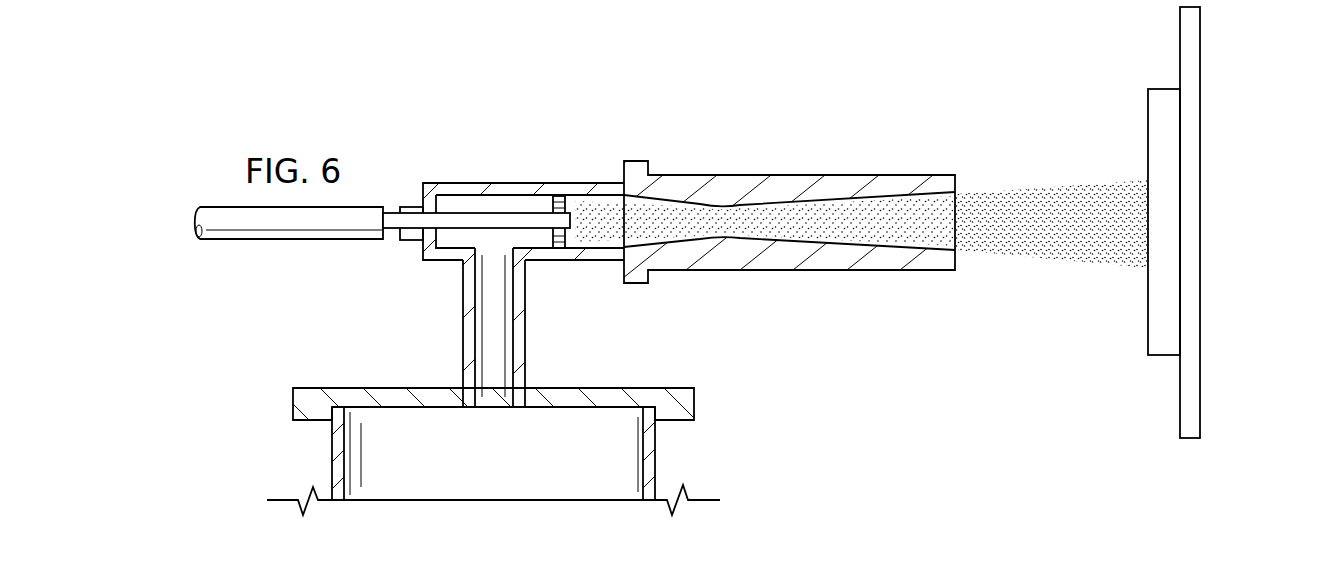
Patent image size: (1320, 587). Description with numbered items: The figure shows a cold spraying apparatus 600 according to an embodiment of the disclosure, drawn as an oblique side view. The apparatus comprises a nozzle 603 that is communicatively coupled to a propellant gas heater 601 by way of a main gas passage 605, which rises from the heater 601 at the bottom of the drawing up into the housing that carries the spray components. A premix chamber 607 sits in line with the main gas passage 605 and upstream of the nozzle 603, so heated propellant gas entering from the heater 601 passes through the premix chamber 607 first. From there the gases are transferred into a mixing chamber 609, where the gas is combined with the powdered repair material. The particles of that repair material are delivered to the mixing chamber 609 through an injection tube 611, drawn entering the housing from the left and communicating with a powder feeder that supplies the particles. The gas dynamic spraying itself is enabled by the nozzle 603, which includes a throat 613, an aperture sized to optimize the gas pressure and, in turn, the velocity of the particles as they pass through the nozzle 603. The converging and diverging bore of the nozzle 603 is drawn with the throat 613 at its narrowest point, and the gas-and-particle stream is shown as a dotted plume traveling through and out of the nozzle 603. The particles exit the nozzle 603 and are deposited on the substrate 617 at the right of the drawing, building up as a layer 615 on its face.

The cold spraying apparatus 600 is at (268, 371).
The propellant gas heater 601 is at (513, 468).
The nozzle 603 is at (636, 160).
The main gas passage 605 is at (503, 348).
The premix chamber 607 is at (515, 202).
The mixing chamber 609 is at (582, 212).
The injection tube 611 is at (460, 210).
The throat 613 is at (738, 233).
The layer 615 is at (1148, 118).
The substrate 617 is at (1200, 407).